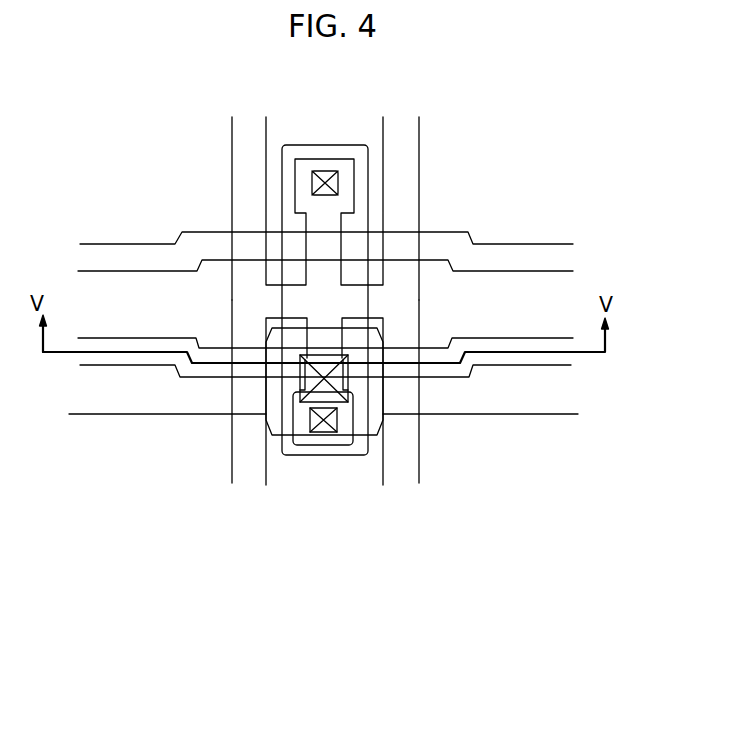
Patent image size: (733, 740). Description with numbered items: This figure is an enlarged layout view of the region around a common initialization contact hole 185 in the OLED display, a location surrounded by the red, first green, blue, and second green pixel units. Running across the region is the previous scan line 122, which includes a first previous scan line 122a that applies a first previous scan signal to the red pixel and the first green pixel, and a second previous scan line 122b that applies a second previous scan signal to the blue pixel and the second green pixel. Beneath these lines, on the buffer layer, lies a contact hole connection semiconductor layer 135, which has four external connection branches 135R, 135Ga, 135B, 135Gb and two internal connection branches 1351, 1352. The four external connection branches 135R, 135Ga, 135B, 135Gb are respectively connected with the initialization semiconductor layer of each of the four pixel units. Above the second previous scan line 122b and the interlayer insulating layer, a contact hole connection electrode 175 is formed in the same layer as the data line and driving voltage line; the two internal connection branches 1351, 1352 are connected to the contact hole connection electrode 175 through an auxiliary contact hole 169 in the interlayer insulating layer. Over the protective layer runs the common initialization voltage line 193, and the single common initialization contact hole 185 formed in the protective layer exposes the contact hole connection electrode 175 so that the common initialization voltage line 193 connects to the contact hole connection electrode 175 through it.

The previous scan line 122 is at (362, 253).
The first previous scan line 122a is at (549, 271).
The second previous scan line 122b is at (547, 340).
The contact hole connection semiconductor layer 135 is at (406, 391).
The external connection branch 135R is at (232, 130).
The external connection branch 135Ga is at (419, 130).
The external connection branch 135B is at (243, 470).
The external connection branch 135Gb is at (417, 457).
The internal connection branch 1351 is at (308, 158).
The internal connection branch 1352 is at (346, 440).
The auxiliary contact hole 169 is at (330, 171).
The contact hole connection electrode 175 is at (285, 458).
The common initialization contact hole 185 is at (312, 395).
The common initialization voltage line 193 is at (512, 342).